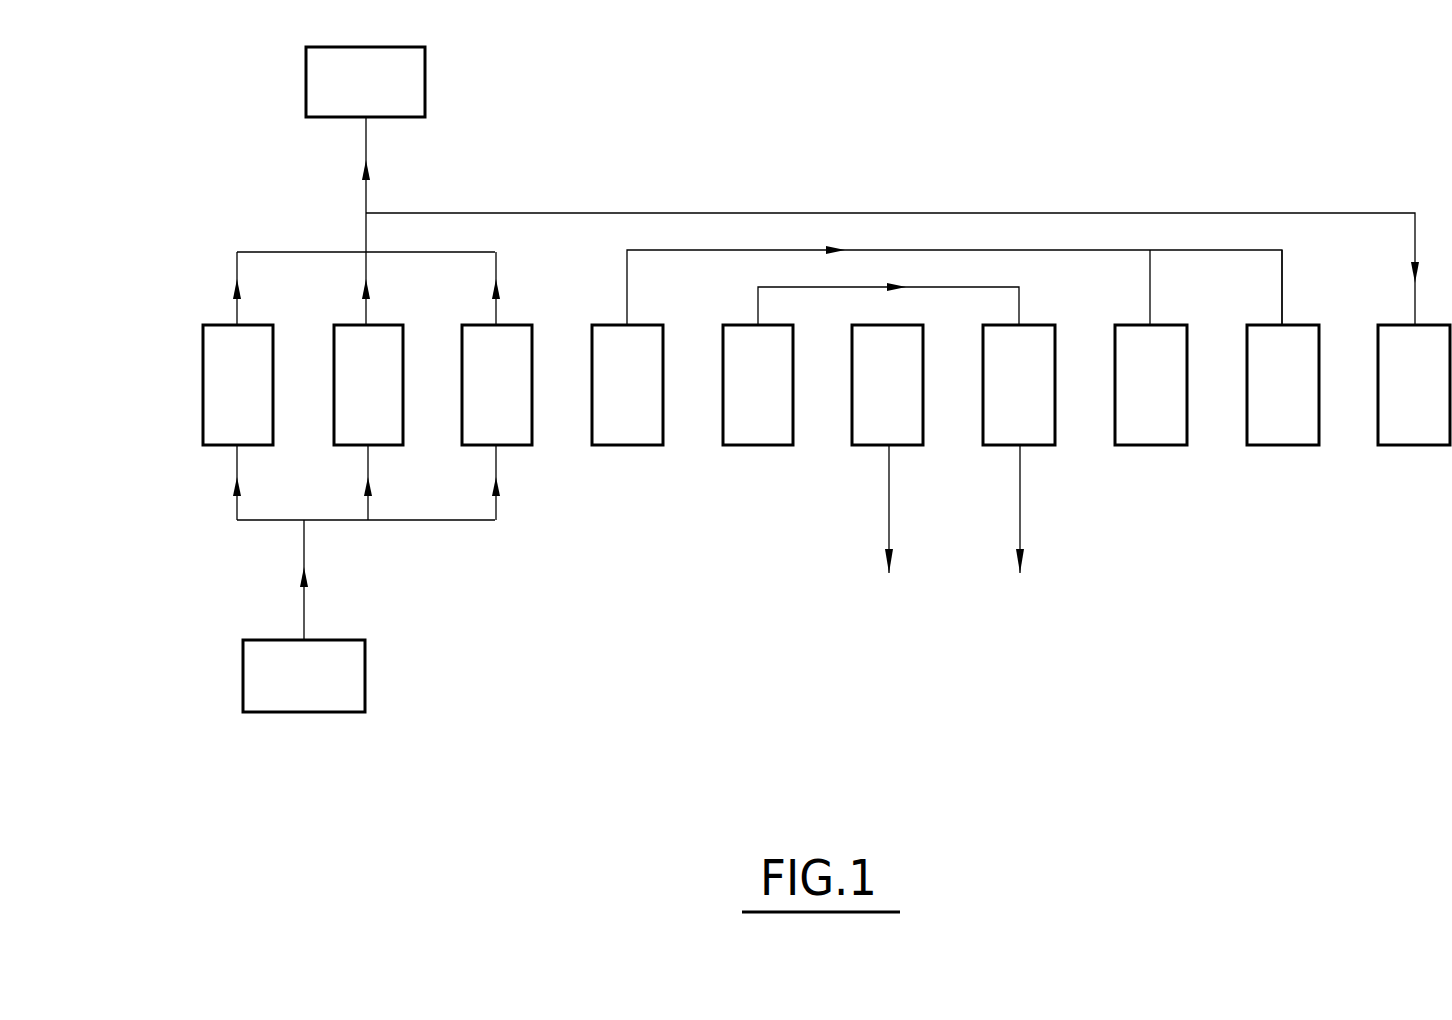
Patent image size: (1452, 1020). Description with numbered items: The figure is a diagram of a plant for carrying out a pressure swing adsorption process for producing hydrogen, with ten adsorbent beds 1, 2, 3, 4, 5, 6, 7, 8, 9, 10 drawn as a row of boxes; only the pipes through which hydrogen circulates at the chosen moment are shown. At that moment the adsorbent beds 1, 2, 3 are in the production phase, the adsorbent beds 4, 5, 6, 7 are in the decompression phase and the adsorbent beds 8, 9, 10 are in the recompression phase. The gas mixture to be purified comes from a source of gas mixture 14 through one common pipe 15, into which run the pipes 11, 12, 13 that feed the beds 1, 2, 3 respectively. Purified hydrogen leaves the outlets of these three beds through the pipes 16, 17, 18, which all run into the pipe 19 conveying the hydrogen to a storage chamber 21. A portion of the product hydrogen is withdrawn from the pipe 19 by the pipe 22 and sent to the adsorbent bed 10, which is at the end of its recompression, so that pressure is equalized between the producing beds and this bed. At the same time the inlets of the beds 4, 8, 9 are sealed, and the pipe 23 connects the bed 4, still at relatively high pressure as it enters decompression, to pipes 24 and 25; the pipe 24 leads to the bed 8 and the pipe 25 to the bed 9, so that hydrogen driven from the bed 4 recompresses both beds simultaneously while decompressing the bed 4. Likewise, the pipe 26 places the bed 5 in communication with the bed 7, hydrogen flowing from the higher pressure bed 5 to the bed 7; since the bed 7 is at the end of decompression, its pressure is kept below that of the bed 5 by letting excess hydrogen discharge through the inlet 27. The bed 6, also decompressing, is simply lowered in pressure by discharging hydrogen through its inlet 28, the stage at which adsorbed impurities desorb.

The adsorbent bed 1 is at (238, 385).
The adsorbent bed 2 is at (368, 385).
The adsorbent bed 3 is at (497, 385).
The adsorbent bed 4 is at (627, 385).
The adsorbent bed 5 is at (758, 385).
The adsorbent bed 6 is at (887, 385).
The adsorbent bed 7 is at (1019, 385).
The adsorbent bed 8 is at (1151, 385).
The adsorbent bed 9 is at (1283, 385).
The adsorbent bed 10 is at (1414, 385).
The pipe 11 is at (237, 507).
The pipe 12 is at (368, 520).
The pipe 13 is at (498, 505).
The source of gas mixture 14 is at (304, 676).
The pipe 15 is at (304, 607).
The pipe 16 is at (237, 306).
The pipe 17 is at (366, 304).
The pipe 18 is at (498, 312).
The pipe 19 is at (362, 181).
The storage chamber 21 is at (365, 82).
The pipe 22 is at (988, 213).
The pipe 23 is at (1040, 248).
The pipe 24 is at (1152, 283).
The pipe 25 is at (1283, 275).
The pipe 26 is at (791, 287).
The inlet 27 is at (1022, 512).
The inlet 28 is at (892, 527).